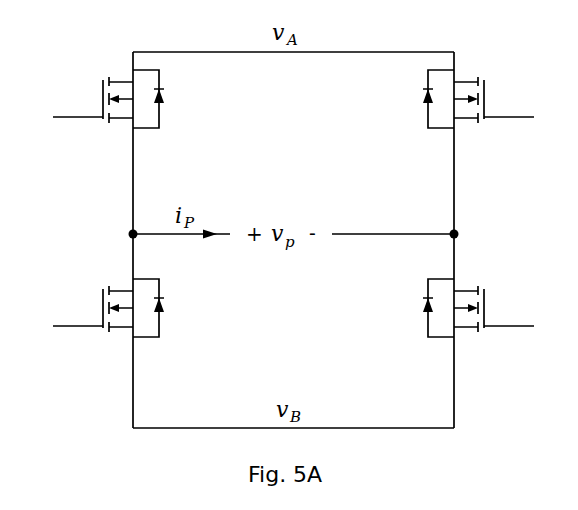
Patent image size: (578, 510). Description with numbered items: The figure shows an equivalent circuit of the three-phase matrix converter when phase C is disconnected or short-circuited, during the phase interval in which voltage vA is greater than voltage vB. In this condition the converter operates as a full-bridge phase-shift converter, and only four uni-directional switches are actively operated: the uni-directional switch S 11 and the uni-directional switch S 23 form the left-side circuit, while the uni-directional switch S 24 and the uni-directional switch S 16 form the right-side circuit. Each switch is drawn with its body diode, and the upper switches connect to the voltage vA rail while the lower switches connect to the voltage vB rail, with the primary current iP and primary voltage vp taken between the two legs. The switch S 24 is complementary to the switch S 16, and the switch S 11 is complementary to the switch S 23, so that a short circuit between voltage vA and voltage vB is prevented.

The uni-directional switch S11 11 is at (106, 99).
The uni-directional switch S24 24 is at (482, 99).
The uni-directional switch S23 23 is at (106, 308).
The uni-directional switch S16 16 is at (482, 308).